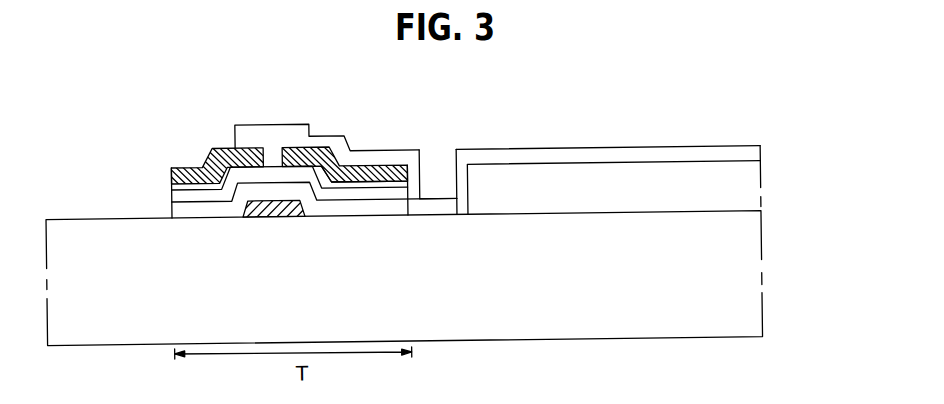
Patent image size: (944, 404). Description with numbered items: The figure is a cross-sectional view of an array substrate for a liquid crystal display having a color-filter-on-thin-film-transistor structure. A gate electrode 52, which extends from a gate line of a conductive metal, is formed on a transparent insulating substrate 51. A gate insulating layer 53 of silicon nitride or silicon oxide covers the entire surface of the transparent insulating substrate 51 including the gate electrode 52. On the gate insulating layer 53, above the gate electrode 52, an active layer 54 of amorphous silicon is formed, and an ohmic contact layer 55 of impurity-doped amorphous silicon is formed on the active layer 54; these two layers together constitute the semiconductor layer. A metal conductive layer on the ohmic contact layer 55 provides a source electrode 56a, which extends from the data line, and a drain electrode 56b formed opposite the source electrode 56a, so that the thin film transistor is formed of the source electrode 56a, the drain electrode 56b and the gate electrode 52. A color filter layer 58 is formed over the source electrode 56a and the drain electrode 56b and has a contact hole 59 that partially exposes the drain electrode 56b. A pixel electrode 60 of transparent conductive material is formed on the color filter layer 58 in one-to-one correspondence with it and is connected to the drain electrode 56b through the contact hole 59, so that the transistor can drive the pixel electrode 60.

The transparent insulating substrate 51 is at (751, 273).
The gate electrode 52 is at (277, 216).
The gate insulating layer 53 is at (182, 210).
The active layer 54 is at (248, 180).
The ohmic contact layer 55 is at (381, 185).
The source electrode 56a is at (172, 175).
The drain electrode 56b is at (322, 151).
The color filter layer 58 is at (751, 182).
The contact hole 59 is at (437, 181).
The pixel electrode 60 is at (540, 166).